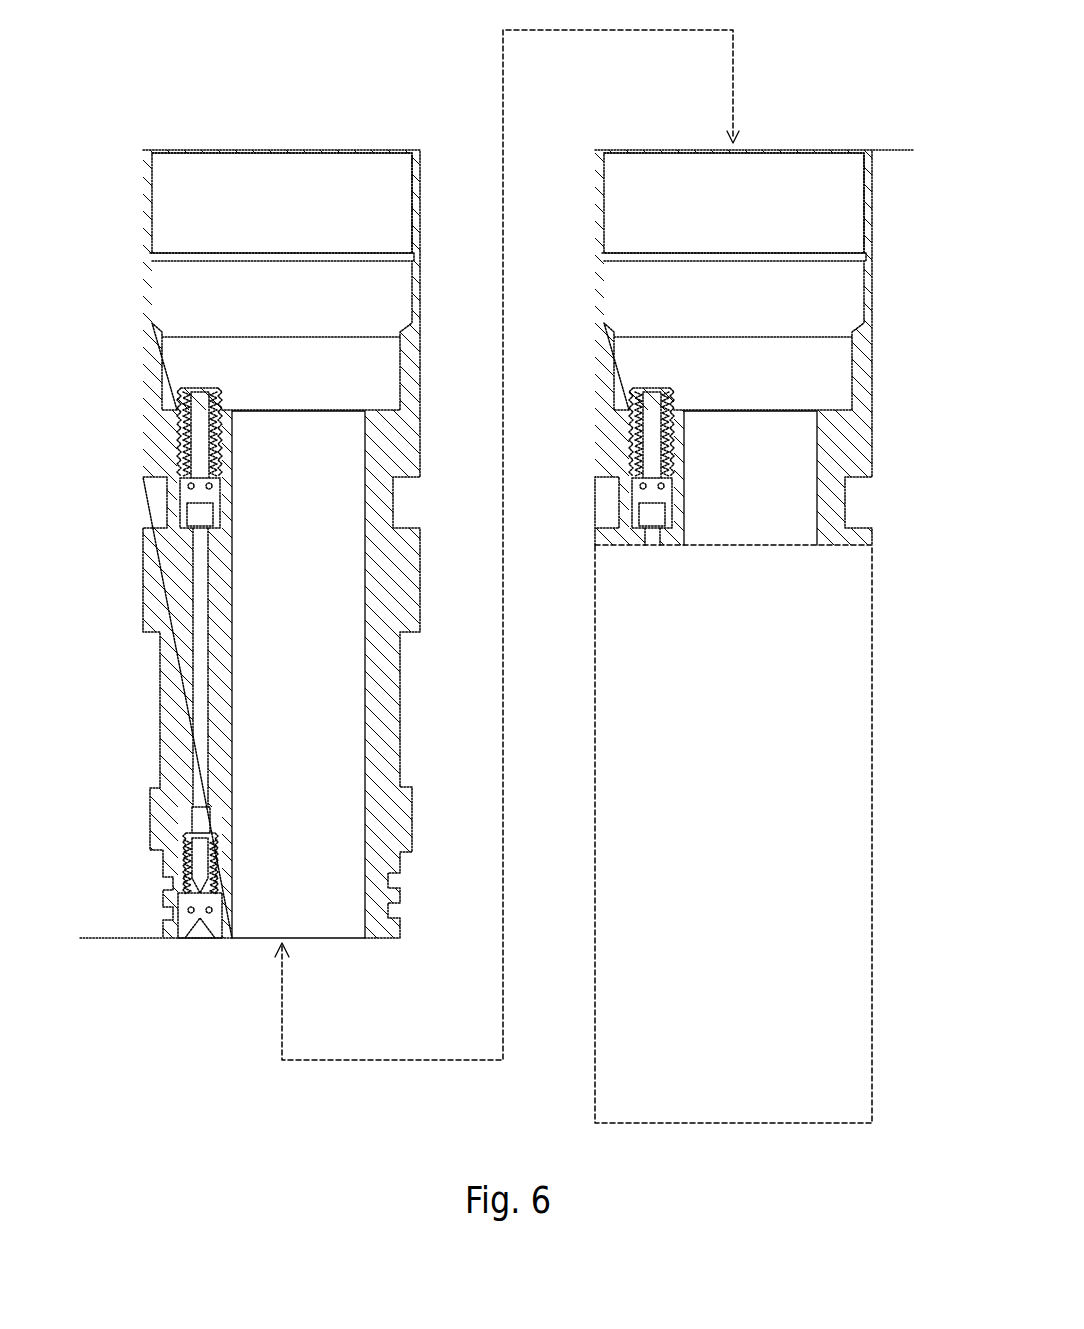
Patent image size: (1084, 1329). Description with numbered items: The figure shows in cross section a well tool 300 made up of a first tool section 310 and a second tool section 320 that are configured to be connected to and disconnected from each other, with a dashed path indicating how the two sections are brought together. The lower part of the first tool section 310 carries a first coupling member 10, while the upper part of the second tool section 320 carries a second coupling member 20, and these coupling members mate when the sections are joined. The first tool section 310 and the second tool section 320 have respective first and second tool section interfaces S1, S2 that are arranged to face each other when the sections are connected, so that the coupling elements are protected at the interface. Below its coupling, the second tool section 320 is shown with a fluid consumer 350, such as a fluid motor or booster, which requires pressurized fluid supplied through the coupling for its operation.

The first coupling member 10 is at (187, 862).
The second coupling member 20 is at (187, 403).
The well tool 300 is at (507, 530).
The first tool section 310 is at (282, 203).
The second tool section 320 is at (734, 203).
The fluid consumer 350 is at (733, 834).
The first tool section interface S1 is at (102, 938).
The second tool section interface S2 is at (918, 148).